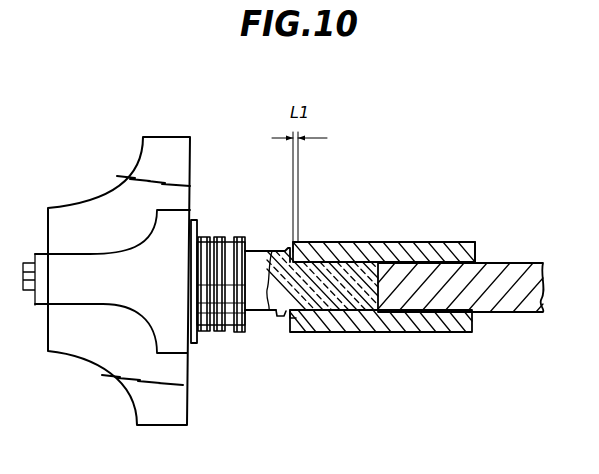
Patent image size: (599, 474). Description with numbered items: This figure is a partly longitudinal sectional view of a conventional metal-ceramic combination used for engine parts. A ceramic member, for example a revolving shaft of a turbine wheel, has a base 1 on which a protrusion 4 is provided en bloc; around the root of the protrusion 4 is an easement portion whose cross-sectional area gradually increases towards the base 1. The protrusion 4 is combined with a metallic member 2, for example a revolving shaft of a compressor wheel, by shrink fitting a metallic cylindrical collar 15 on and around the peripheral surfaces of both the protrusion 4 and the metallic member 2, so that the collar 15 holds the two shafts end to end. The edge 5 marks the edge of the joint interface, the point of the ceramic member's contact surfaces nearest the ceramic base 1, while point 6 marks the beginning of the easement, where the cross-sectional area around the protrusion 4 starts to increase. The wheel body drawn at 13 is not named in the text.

The base 1 is at (260, 250).
The metallic member 2 is at (518, 300).
The protrusion 4 is at (357, 265).
The edge of joint interface 5 is at (293, 318).
The beginning point of the easement 6 is at (283, 318).
The impeller 13 is at (172, 407).
The metallic cylindrical collar 15 is at (455, 250).